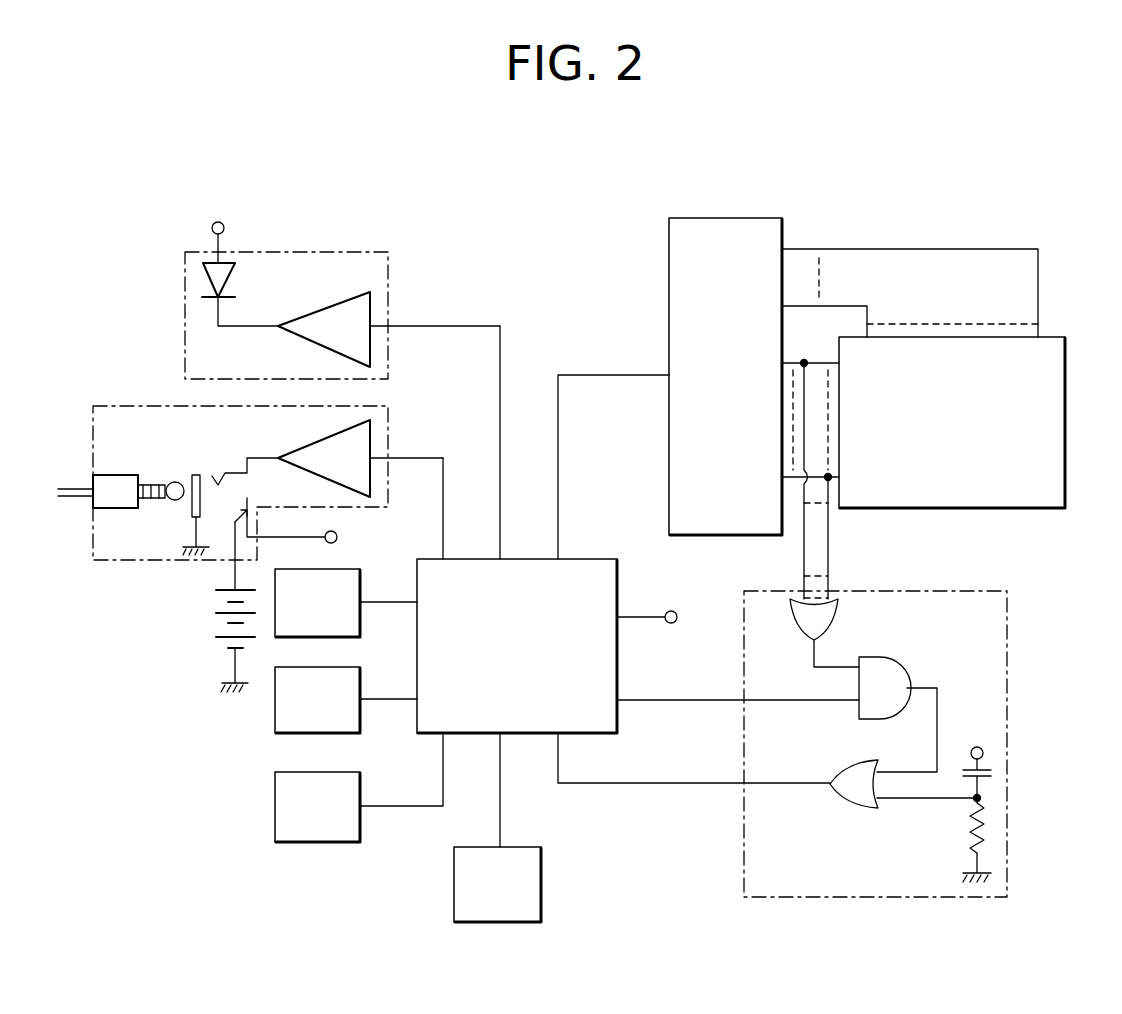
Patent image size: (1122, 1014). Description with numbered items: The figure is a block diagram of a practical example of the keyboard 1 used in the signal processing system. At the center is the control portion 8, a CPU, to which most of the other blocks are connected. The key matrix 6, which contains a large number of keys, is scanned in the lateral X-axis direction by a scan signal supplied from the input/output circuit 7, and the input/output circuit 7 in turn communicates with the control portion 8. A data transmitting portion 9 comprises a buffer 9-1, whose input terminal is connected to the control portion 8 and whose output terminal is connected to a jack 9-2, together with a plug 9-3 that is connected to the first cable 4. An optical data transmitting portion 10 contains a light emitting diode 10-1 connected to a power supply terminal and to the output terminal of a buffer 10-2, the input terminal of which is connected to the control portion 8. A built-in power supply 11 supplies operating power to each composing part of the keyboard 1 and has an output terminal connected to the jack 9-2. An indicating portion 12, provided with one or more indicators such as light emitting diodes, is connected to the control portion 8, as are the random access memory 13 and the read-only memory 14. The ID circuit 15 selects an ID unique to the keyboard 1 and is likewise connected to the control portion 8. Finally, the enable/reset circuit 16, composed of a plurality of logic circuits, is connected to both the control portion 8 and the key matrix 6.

The keyboard 1 is at (556, 289).
The first cable 4 is at (70, 487).
The key matrix 6 is at (1065, 449).
The input/output circuit 7 is at (782, 225).
The control portion 8 is at (590, 559).
The data transmitting portion 9 is at (140, 406).
The buffer 9-1 is at (373, 436).
The jack 9-2 is at (212, 496).
The plug 9-3 is at (152, 478).
The optical data transmitting portion 10 is at (388, 270).
The light emitting diode 10-1 is at (185, 270).
The buffer 10-2 is at (333, 300).
The built-in power supply 11 is at (213, 625).
The indicating portion 12 is at (338, 842).
The random access memory 13 is at (333, 637).
The read-only memory 14 is at (341, 733).
The ID circuit 15 is at (541, 869).
The enable/reset circuit 16 is at (950, 591).